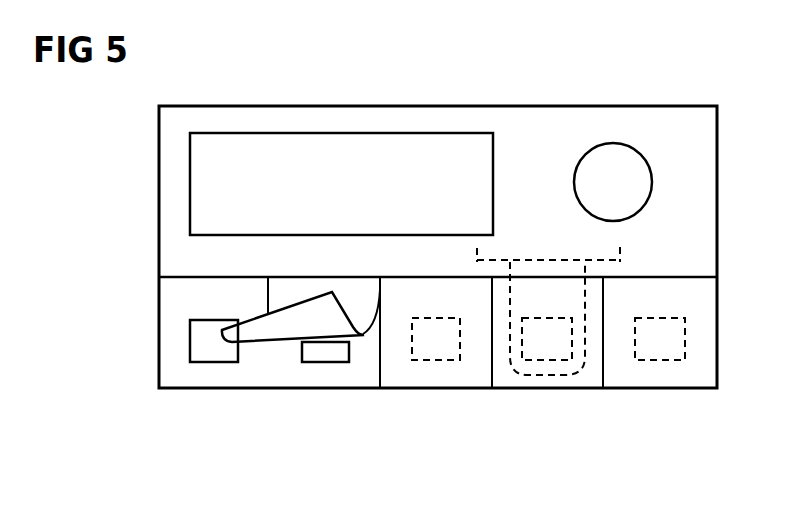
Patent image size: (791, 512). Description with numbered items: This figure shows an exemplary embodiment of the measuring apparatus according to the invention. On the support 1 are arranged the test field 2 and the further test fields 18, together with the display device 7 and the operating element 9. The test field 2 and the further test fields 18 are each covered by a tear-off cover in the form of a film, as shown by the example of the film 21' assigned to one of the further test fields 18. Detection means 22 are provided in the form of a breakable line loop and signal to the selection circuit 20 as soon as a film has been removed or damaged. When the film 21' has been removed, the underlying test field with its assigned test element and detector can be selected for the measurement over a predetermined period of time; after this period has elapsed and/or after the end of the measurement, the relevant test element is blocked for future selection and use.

The support 1 is at (170, 204).
The display device 7 is at (478, 170).
The operating element 9 is at (647, 158).
The selection circuit 20 is at (618, 247).
The detection means 22 is at (525, 375).
The test field 2 is at (213, 358).
The film 21' is at (301, 364).
The further test fields 18 is at (340, 355).